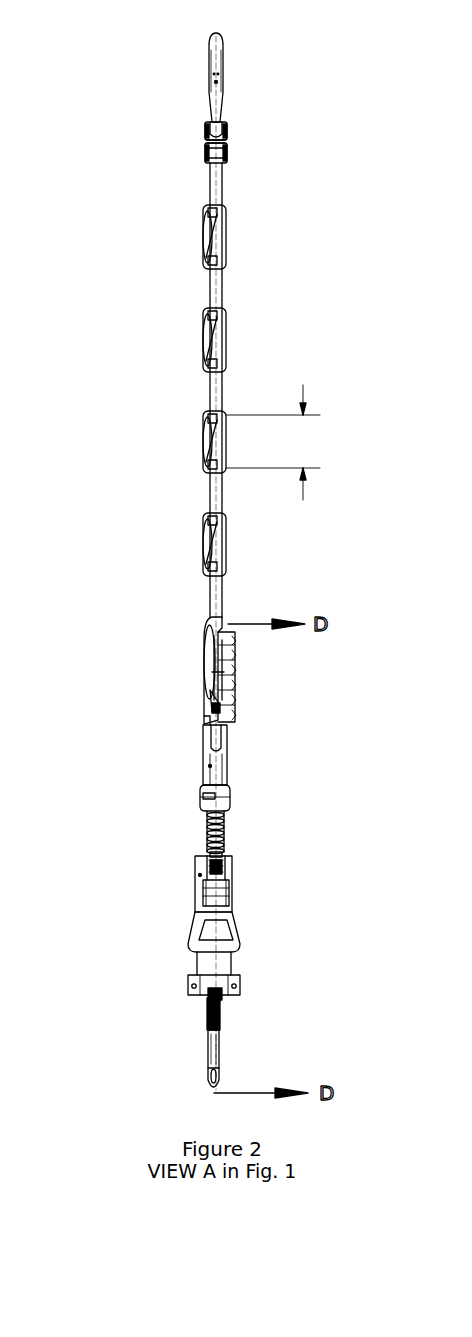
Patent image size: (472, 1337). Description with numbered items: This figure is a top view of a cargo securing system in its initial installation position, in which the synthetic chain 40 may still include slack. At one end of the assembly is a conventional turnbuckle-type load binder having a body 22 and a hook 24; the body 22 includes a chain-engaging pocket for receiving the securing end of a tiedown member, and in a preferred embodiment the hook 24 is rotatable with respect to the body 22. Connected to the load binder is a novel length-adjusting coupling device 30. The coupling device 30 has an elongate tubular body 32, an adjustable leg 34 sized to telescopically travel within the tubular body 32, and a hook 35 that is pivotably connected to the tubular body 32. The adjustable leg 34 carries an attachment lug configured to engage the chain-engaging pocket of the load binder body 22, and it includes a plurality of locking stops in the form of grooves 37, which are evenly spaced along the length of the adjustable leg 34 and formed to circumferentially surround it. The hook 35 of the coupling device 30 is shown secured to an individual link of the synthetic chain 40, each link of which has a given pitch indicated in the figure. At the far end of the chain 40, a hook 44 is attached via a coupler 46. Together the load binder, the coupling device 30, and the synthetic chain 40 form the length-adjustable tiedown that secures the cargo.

The body 22 is at (202, 875).
The hook 24 is at (207, 1075).
The length-adjusting coupling device 30 is at (225, 808).
The elongate tubular body 32 is at (210, 766).
The adjustable leg 34 is at (205, 850).
The hook 35 is at (208, 677).
The grooves 37 is at (240, 820).
The synthetic chain 40 is at (272, 364).
The hook 44 is at (216, 82).
The coupler 46 is at (208, 146).